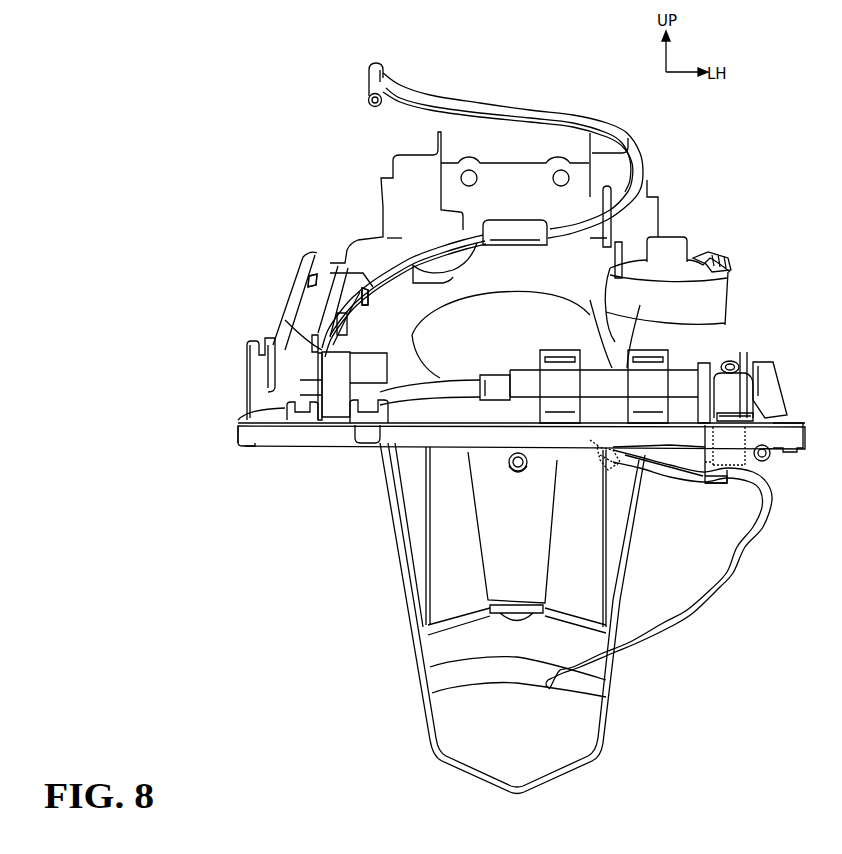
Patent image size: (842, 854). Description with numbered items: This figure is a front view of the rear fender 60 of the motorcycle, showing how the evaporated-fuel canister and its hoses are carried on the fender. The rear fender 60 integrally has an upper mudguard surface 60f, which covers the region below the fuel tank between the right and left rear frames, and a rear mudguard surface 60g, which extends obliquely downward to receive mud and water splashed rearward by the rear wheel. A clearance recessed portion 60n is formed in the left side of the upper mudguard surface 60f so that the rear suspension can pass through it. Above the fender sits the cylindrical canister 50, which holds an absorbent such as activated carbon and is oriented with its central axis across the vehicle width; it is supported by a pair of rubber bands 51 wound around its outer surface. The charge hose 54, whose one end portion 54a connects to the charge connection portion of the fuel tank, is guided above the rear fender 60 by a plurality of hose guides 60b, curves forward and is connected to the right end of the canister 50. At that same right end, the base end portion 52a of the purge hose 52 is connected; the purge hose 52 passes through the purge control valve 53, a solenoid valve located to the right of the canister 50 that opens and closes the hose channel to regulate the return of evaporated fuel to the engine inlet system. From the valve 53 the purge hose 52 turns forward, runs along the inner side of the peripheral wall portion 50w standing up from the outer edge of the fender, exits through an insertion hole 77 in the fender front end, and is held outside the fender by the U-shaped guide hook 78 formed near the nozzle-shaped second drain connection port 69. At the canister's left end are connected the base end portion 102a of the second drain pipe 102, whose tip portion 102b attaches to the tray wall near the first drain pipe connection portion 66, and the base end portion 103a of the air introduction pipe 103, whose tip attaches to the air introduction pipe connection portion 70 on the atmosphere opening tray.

The canister 50 is at (611, 350).
The peripheral wall portion 50w is at (390, 442).
The rubber band 51 is at (552, 350).
The purge hose 52 is at (437, 380).
The base end portion 52a is at (490, 382).
The purge control valve 53 is at (340, 388).
The charge hose 54 is at (545, 108).
The one end portion 54a is at (368, 97).
The rear fender 60 is at (353, 236).
The hose guide 60b is at (510, 228).
The upper mudguard surface 60f is at (300, 445).
The rear mudguard surface 60g is at (422, 677).
The clearance recessed portion 60n is at (673, 253).
The first drain pipe connection portion 66 is at (678, 466).
The second drain connection port 69 is at (772, 458).
The air introduction pipe connection portion 70 is at (800, 423).
The insertion hole 77 is at (618, 462).
The guide hook 78 is at (714, 484).
The second drain pipe 102 is at (730, 455).
The base end portion 102a is at (730, 361).
The tip portion 102b is at (752, 416).
The air introduction pipe 103 is at (755, 400).
The base end portion 103a is at (730, 395).